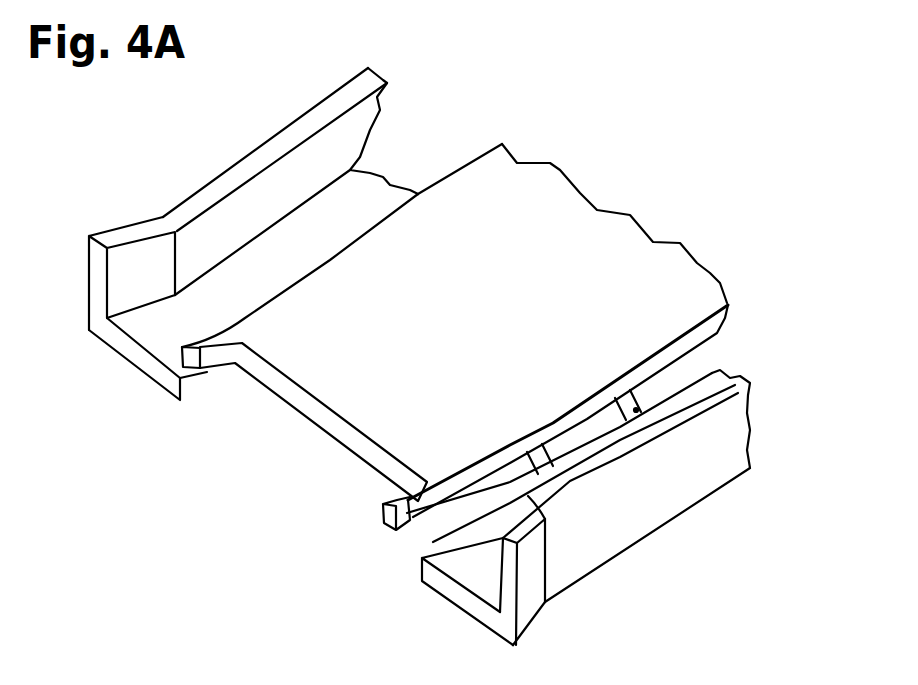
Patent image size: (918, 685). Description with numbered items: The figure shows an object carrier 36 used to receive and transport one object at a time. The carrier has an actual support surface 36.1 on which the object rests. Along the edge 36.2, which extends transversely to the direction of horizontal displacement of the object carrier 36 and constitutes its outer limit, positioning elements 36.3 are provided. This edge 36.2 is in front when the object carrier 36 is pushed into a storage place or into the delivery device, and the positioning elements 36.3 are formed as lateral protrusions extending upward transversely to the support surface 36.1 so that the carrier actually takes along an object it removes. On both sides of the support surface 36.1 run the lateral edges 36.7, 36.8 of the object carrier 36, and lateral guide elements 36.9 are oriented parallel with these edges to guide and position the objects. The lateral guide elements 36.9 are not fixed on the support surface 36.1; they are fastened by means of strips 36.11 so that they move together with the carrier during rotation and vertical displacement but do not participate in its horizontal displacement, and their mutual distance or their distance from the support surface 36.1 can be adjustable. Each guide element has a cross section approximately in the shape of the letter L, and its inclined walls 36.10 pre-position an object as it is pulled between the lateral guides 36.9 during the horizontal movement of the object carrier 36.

The object carrier 36 is at (193, 562).
The support surface 36.1 is at (491, 243).
The edge 36.2 is at (348, 440).
The positioning elements 36.3 is at (214, 362).
The lateral edge 36.7 is at (466, 166).
The lateral edge 36.8 is at (722, 328).
The lateral guide elements 36.9 is at (301, 114).
The inclined walls 36.10 is at (118, 240).
The strips 36.11 is at (712, 373).